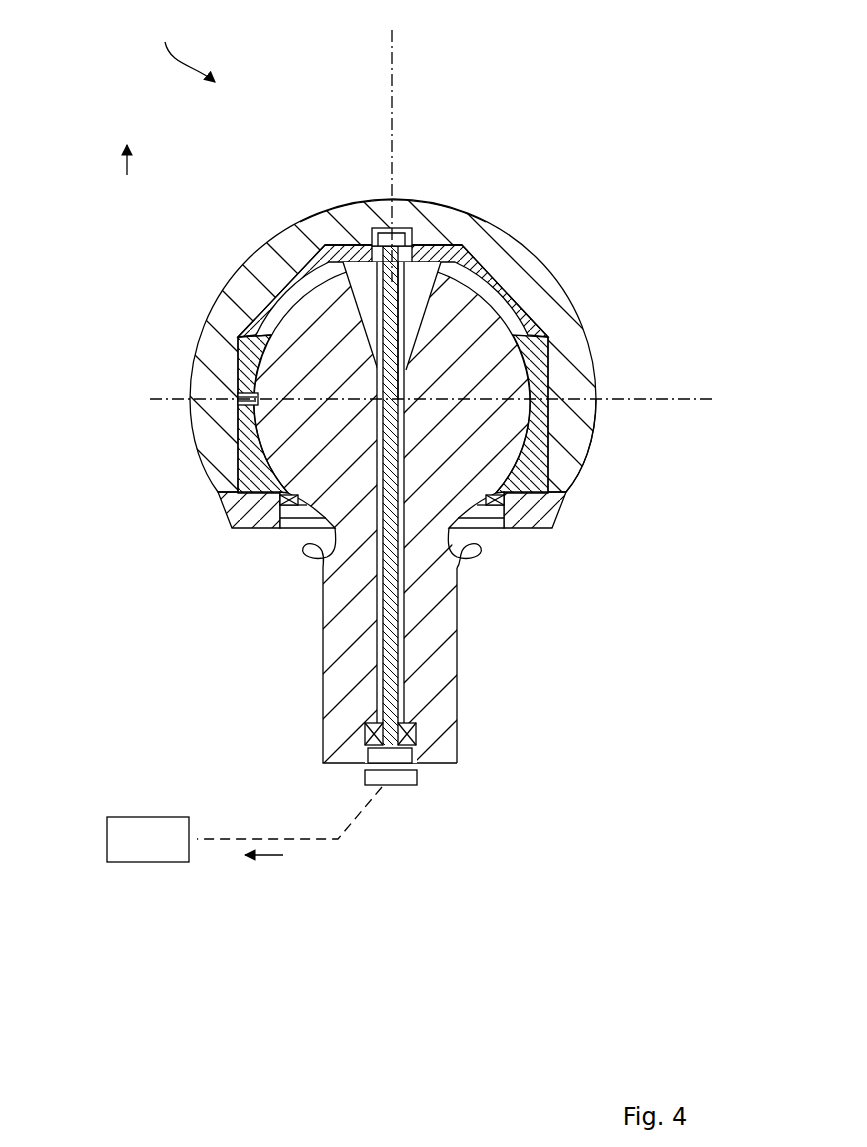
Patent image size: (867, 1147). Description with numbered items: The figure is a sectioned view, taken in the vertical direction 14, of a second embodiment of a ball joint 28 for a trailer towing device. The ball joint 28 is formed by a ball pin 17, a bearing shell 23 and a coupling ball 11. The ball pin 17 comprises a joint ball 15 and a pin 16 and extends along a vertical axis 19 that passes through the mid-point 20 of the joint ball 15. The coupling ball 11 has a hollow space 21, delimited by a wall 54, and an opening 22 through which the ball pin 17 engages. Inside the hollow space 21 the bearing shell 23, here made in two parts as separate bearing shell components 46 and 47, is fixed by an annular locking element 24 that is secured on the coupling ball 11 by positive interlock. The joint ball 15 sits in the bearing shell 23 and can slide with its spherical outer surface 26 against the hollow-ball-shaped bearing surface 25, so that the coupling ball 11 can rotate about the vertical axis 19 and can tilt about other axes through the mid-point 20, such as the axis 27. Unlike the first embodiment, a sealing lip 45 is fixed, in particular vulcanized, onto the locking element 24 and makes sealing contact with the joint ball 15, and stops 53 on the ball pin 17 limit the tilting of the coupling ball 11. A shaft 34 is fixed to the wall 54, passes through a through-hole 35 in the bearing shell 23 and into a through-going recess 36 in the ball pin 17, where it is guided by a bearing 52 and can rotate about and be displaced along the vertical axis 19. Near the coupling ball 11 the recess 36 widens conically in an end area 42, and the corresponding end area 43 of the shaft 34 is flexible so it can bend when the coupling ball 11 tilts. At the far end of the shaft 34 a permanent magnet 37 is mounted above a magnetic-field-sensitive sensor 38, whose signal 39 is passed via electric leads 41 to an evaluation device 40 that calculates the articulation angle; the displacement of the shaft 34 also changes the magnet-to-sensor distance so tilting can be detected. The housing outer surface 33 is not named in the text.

The coupling ball 11 is at (226, 283).
The vertical direction 14 is at (125, 158).
The joint ball 15 is at (275, 438).
The pin 16 is at (458, 643).
The ball pin 17 is at (322, 640).
The vertical axis 19 is at (398, 60).
The mid-point 20 is at (395, 403).
The hollow space 21 is at (490, 512).
The opening 22 is at (498, 533).
The bearing shell 23 is at (232, 353).
The annular locking element 24 is at (233, 510).
The hollow-ball-shaped bearing surface 25 is at (268, 415).
The spherical outer surface 26 is at (263, 326).
The axis 27 is at (668, 399).
The ball joint 28 is at (182, 48).
The housing outer surface 33 is at (593, 418).
The shaft 34 is at (390, 668).
The through-hole 35 is at (372, 244).
The through-going recess 36 is at (405, 685).
The permanent magnet 37 is at (405, 757).
The magnetic-field-sensitive sensor 38 is at (410, 778).
The signal 39 is at (264, 872).
The evaluation device 40 is at (150, 860).
The electric leads 41 is at (330, 840).
The end area 42 is at (418, 288).
The end area 43 is at (398, 317).
The sealing lip 45 is at (283, 513).
The bearing shell component 46 is at (290, 262).
The bearing shell component 47 is at (548, 450).
The bearing 52 is at (367, 735).
The stops 53 is at (307, 555).
The wall 54 is at (290, 237).